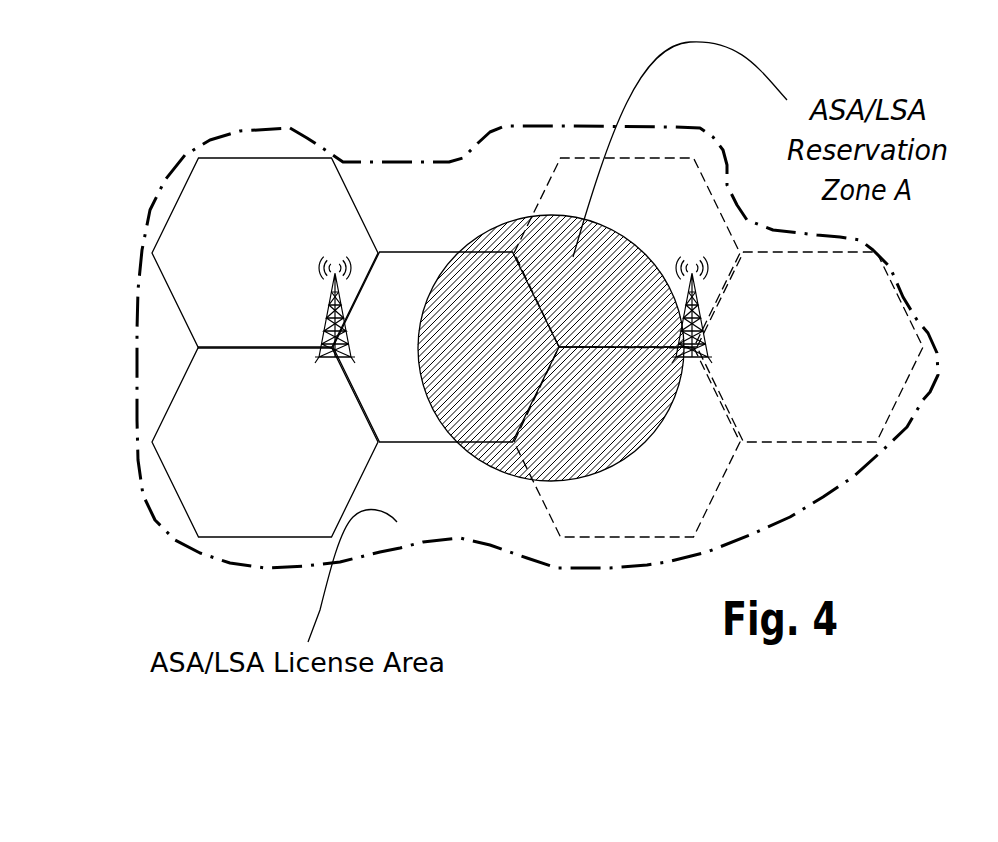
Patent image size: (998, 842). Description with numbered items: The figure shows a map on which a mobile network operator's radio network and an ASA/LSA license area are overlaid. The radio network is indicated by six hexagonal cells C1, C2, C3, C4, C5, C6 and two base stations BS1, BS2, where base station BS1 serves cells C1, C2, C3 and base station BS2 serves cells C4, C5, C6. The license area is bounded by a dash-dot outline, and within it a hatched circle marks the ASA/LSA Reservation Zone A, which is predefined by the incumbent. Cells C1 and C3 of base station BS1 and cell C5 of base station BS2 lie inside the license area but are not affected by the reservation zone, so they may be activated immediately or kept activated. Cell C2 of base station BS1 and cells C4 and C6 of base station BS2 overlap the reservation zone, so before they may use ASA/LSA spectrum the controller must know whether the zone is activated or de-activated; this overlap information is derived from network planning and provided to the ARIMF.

The cell C1 is at (265, 253).
The cell C2 is at (446, 347).
The cell C3 is at (265, 442).
The cell C4 is at (627, 253).
The cell C5 is at (810, 347).
The cell C6 is at (627, 442).
The base station BS1 is at (322, 318).
The base station BS2 is at (680, 318).